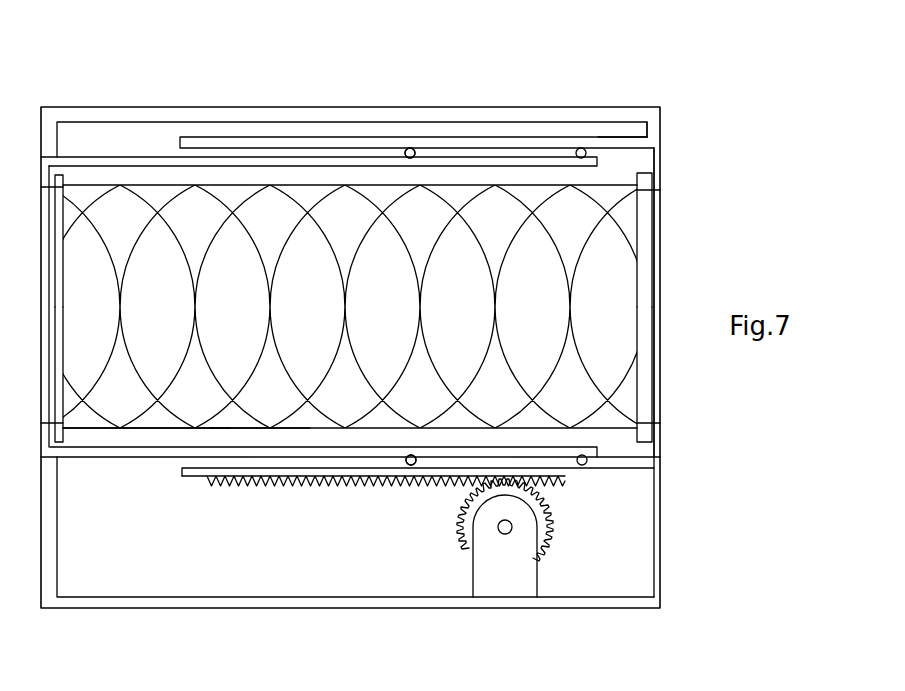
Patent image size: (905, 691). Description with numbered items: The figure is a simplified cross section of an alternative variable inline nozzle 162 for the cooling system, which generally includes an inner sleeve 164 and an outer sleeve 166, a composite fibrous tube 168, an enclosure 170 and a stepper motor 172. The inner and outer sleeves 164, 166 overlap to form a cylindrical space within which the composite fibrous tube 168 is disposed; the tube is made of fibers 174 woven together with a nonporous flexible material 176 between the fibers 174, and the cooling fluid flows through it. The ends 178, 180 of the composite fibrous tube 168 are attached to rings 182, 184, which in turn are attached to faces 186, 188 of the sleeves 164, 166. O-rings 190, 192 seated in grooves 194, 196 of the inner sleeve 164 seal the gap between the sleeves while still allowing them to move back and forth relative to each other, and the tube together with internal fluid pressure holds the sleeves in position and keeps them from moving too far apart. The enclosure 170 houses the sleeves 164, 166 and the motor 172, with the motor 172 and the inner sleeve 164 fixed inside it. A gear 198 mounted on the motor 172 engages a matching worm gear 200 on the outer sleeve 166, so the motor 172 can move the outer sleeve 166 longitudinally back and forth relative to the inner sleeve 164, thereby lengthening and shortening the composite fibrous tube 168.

The variable inline nozzle 162 is at (265, 82).
The inner sleeve 164 is at (347, 163).
The outer sleeve 166 is at (612, 140).
The composite fibrous tube 168 is at (158, 192).
The enclosure 170 is at (468, 113).
The stepper motor 172 is at (483, 540).
The fibers 174 is at (217, 400).
The nonporous flexible material 176 is at (262, 376).
The end of composite fibrous tube 178 is at (66, 253).
The end of composite fibrous tube 180 is at (640, 276).
The ring 182 is at (66, 362).
The ring 184 is at (648, 368).
The face of inner sleeve 186 is at (47, 296).
The face of outer sleeve 188 is at (658, 222).
The O-ring 190 is at (408, 150).
The O-ring 192 is at (583, 137).
The groove 194 is at (413, 150).
The groove 196 is at (578, 150).
The gear 198 is at (548, 527).
The worm gear 200 is at (342, 482).